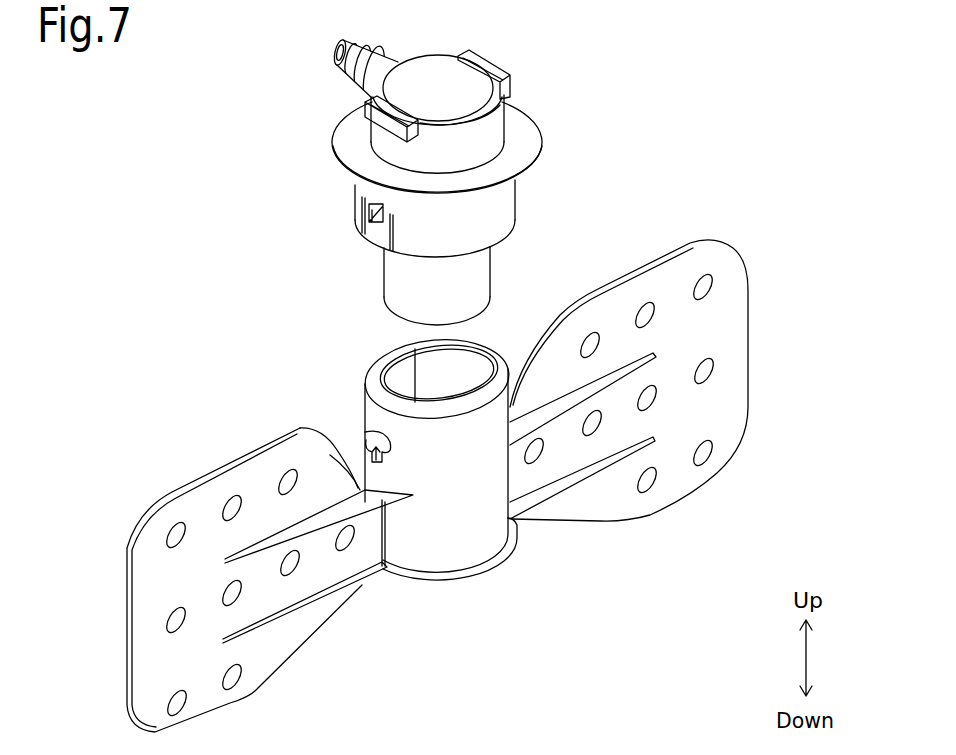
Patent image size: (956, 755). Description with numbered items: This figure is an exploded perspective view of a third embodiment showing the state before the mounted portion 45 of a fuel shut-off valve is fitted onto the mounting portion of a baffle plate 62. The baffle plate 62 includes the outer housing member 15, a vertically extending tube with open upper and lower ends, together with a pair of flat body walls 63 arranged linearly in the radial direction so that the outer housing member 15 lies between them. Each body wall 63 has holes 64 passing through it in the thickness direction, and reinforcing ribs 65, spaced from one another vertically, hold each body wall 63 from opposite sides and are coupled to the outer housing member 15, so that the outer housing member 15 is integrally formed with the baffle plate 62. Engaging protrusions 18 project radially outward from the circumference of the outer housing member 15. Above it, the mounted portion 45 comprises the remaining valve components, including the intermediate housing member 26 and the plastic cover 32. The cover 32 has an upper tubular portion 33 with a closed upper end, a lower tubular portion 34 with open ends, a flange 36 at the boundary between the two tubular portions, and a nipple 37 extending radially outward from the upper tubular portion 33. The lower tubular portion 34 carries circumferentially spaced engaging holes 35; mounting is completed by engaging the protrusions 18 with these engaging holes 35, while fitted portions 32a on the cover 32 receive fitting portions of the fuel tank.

The outer housing member 15 is at (468, 548).
The engaging protrusion 18 is at (365, 447).
The intermediate housing member 26 is at (387, 279).
The cover 32 is at (416, 92).
The fitted portion 32a is at (506, 62).
The upper tubular portion 33 is at (428, 66).
The lower tubular portion 34 is at (505, 218).
The engaging hole 35 is at (365, 232).
The flange 36 is at (541, 141).
The nipple 37 is at (341, 50).
The mounted portion 45 is at (565, 91).
The baffle plate 62 is at (193, 436).
The body wall 63 is at (278, 650).
The hole 64 is at (282, 474).
The reinforcing rib 65 is at (356, 587).